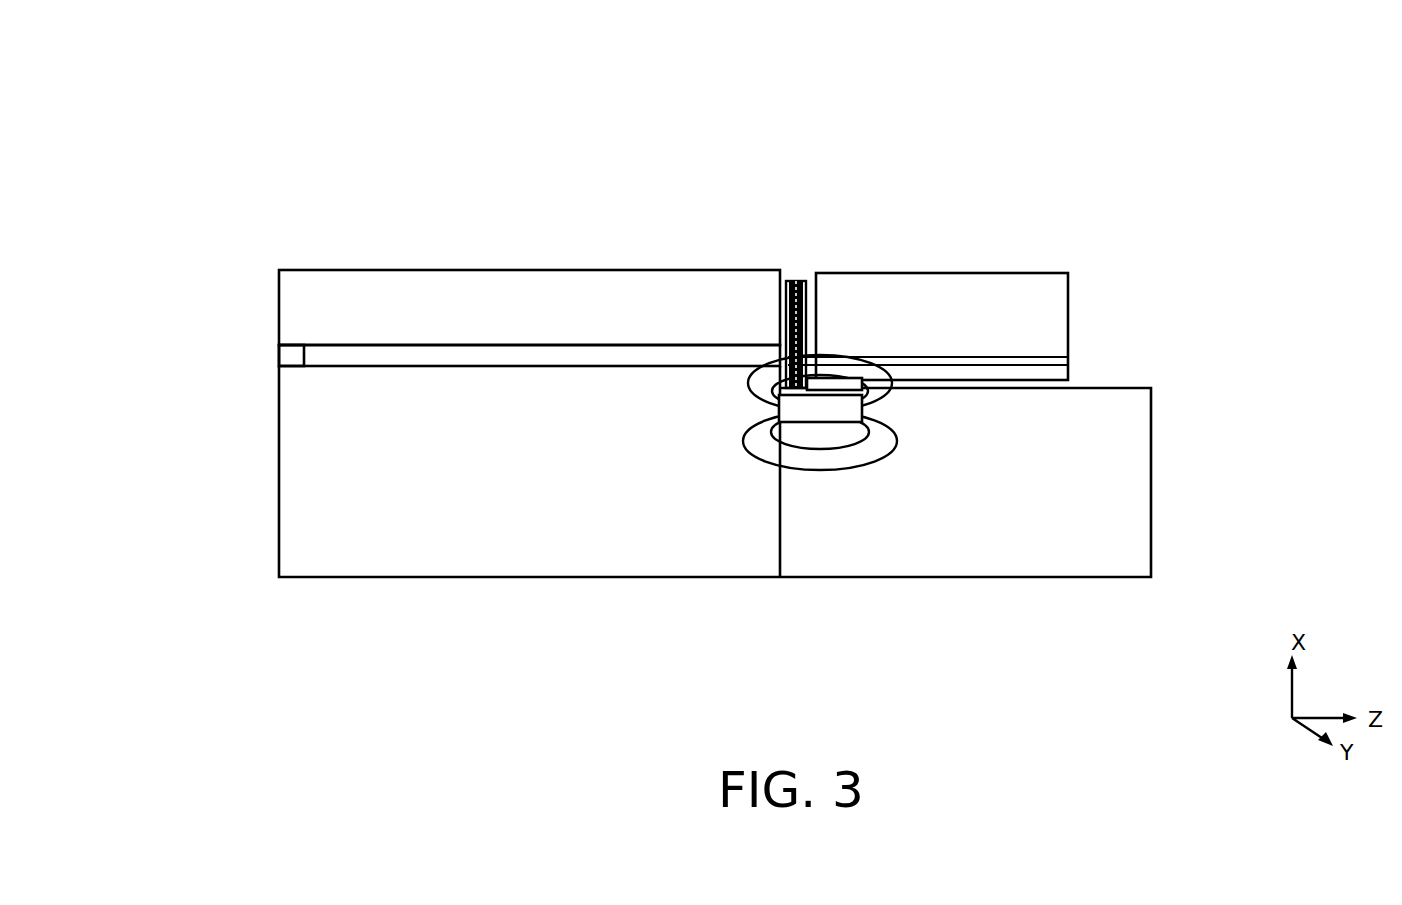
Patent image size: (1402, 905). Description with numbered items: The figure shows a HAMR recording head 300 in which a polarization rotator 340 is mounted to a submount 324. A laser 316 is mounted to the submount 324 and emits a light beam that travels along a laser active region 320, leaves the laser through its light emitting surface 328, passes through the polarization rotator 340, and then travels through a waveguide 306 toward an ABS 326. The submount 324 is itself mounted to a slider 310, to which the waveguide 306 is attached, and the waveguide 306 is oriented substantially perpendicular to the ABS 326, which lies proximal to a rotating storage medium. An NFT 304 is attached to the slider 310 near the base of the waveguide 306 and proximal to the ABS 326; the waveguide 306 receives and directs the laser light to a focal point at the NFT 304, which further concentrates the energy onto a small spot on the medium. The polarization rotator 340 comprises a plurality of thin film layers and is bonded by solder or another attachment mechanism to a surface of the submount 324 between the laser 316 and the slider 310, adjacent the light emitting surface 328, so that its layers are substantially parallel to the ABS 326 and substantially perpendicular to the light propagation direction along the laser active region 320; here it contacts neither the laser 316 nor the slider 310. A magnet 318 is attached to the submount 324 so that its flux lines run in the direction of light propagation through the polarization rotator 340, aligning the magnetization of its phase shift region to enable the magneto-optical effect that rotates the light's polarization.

The HAMR recording head 300 is at (256, 146).
The NFT 304 is at (293, 345).
The waveguide 306 is at (472, 345).
The slider 310 is at (393, 270).
The laser 316 is at (1003, 273).
The magnet 318 is at (880, 440).
The laser active region 320 is at (1080, 360).
The submount 324 is at (1152, 507).
The ABS 326 is at (268, 398).
The light emitting surface 328 is at (830, 316).
The polarization rotator 340 is at (795, 281).